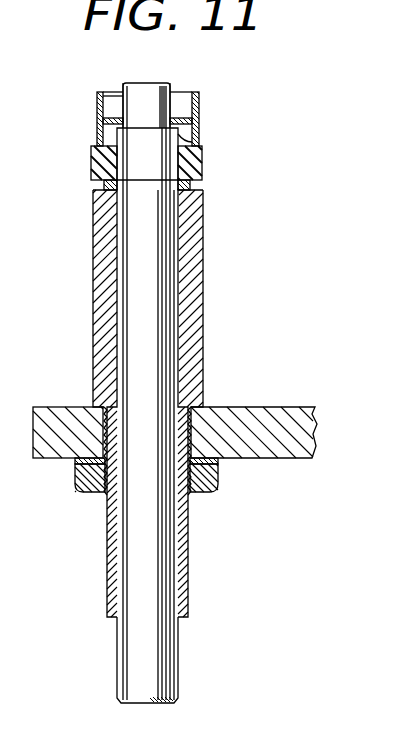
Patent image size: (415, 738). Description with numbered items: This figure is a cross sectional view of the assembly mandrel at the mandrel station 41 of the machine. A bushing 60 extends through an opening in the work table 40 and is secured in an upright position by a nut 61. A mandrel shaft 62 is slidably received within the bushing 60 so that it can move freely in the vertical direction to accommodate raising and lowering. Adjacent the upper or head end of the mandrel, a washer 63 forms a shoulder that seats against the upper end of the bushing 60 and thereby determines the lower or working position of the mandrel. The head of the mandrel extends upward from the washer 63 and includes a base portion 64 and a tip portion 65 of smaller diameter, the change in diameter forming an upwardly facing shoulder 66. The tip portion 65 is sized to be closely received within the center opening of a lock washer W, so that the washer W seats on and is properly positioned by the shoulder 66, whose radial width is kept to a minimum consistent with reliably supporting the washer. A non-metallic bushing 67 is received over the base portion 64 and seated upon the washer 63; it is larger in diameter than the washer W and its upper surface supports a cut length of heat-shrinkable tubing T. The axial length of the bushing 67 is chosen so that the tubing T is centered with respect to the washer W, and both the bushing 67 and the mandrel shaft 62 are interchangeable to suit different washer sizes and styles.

The mandrel station 41 is at (216, 247).
The bushing 60 is at (192, 312).
The nut 61 is at (210, 478).
The work table 40 is at (243, 430).
The mandrel shaft 62 is at (173, 640).
The tip portion 65 is at (152, 107).
The heat-shrinkable tubing T is at (198, 107).
The lock washer W is at (199, 131).
The upwardly facing shoulder 66 is at (123, 101).
The base portion 64 is at (182, 165).
The non-metallic bushing 67 is at (93, 160).
The washer 63 is at (96, 203).